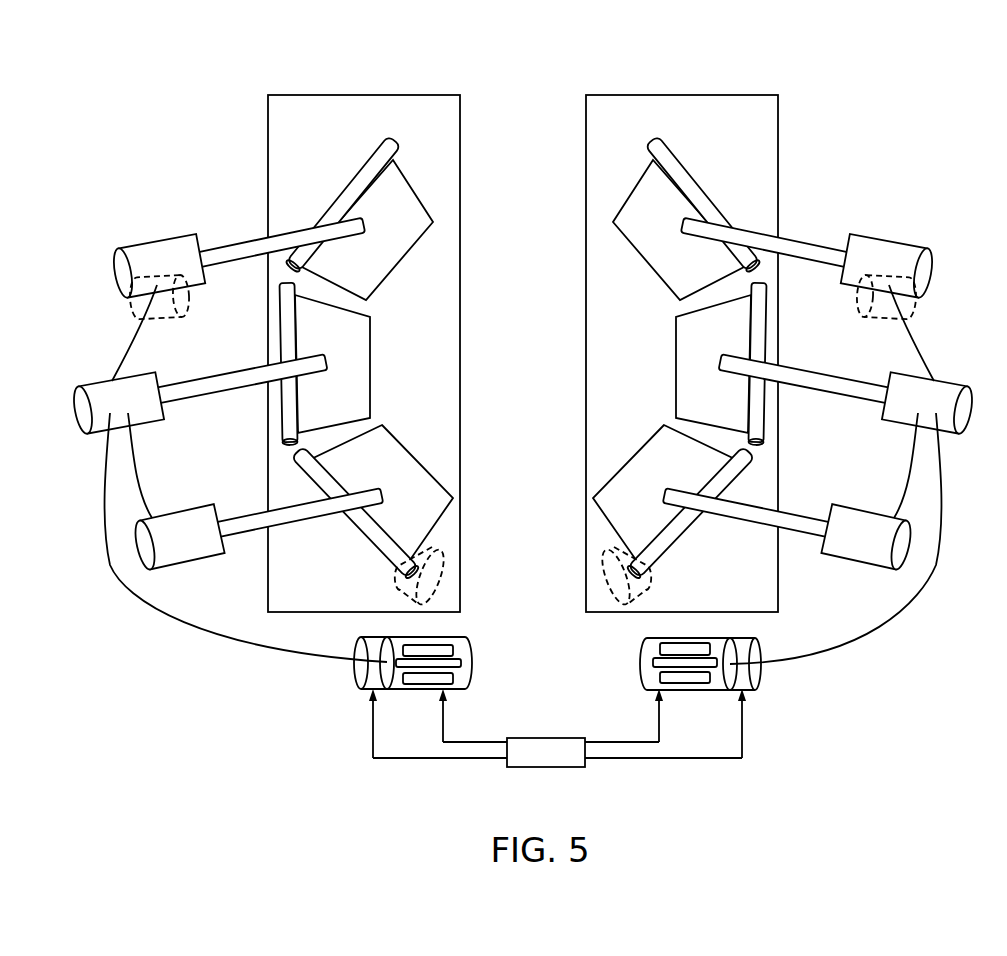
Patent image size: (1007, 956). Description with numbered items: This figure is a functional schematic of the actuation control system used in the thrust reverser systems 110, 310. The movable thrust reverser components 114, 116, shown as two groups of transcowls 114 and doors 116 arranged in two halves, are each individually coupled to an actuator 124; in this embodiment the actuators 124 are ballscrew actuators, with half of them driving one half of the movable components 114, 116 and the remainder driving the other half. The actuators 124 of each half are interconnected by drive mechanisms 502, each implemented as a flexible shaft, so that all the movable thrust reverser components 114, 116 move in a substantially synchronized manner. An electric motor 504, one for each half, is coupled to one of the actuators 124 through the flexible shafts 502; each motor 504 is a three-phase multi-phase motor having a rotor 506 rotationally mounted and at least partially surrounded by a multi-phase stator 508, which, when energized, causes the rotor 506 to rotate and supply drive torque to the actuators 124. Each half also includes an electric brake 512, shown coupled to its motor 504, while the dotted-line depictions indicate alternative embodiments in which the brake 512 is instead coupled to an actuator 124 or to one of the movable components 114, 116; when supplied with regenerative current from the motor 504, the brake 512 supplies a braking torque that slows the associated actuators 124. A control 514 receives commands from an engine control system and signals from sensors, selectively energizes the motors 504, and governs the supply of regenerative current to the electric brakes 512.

The thrust reverser system 110 is at (902, 98).
The thrust reverser system 310 is at (902, 98).
The transcowl 114 is at (381, 95).
The movable thrust reverser component 116 is at (379, 233).
The actuator 124 is at (186, 234).
The drive mechanism 502 is at (143, 333).
The electric motor 504 is at (468, 682).
The rotor 506 is at (465, 664).
The multi-phase stator 508 is at (450, 650).
The electric brake 512 is at (137, 310).
The control 514 is at (545, 768).